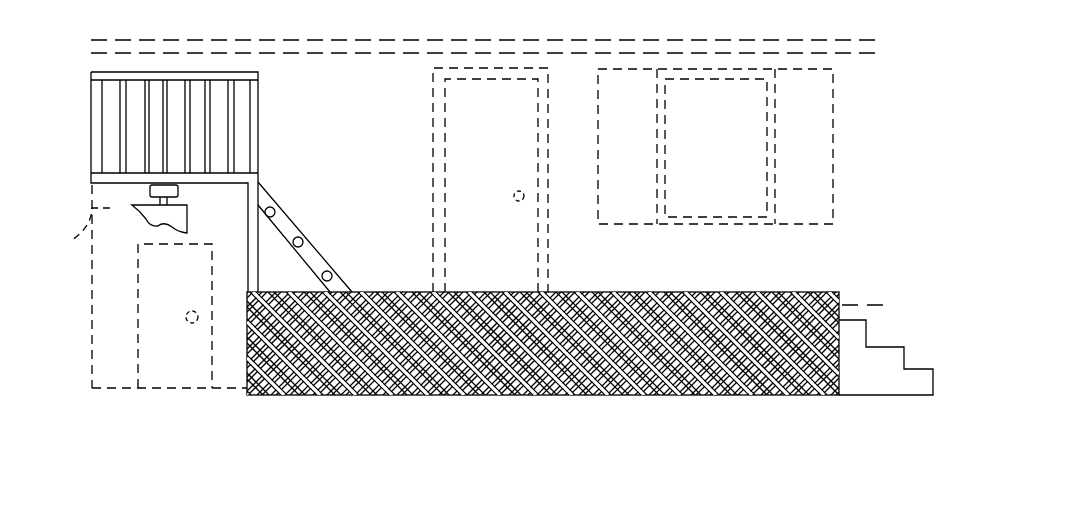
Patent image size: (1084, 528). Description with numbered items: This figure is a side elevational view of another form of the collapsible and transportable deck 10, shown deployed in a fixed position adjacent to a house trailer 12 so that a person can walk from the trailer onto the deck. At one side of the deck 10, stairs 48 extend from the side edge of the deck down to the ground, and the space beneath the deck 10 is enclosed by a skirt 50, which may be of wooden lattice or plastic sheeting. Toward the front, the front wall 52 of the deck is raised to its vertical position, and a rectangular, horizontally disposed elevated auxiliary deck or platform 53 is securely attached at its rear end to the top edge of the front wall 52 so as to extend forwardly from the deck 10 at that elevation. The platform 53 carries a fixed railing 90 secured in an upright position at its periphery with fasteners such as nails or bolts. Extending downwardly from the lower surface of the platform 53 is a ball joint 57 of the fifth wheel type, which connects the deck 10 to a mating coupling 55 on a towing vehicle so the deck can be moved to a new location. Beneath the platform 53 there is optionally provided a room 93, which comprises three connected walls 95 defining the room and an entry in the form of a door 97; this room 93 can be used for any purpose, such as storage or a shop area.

The deck 10 is at (668, 287).
The house trailer 12 is at (536, 57).
The stairs 48 is at (862, 338).
The skirt 50 is at (556, 370).
The front wall 52 is at (248, 259).
The elevated auxiliary deck or platform 53 is at (115, 173).
The mating coupling 55 is at (188, 221).
The ball joint 57 is at (180, 200).
The fixed railing 90 is at (117, 72).
The room 93 is at (92, 318).
The walls 95 is at (82, 286).
The door 97 is at (160, 365).